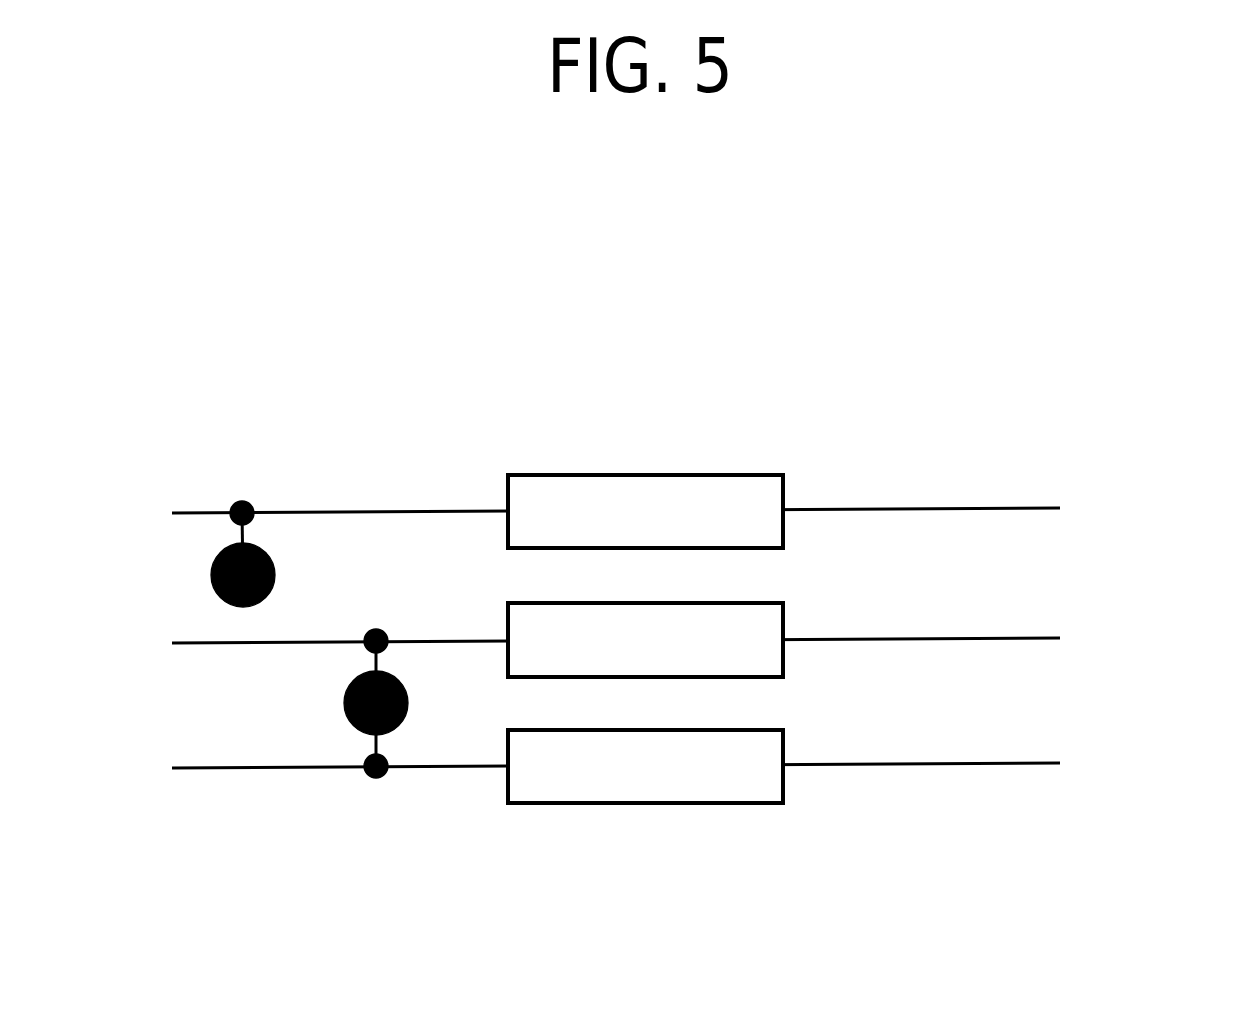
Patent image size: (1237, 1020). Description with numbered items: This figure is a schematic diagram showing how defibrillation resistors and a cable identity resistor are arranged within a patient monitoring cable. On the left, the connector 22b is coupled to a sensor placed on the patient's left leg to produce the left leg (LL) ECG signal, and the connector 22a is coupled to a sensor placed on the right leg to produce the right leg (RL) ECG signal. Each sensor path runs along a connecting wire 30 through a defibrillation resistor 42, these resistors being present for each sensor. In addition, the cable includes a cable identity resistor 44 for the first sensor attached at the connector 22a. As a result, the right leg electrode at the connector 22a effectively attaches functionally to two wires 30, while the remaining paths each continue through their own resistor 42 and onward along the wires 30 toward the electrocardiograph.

The wires 30 is at (1045, 765).
The defibrillation resistors 42 is at (742, 475).
The cable identity resistor 44 is at (778, 803).
The connector 22a is at (352, 723).
The connector 22b is at (225, 602).